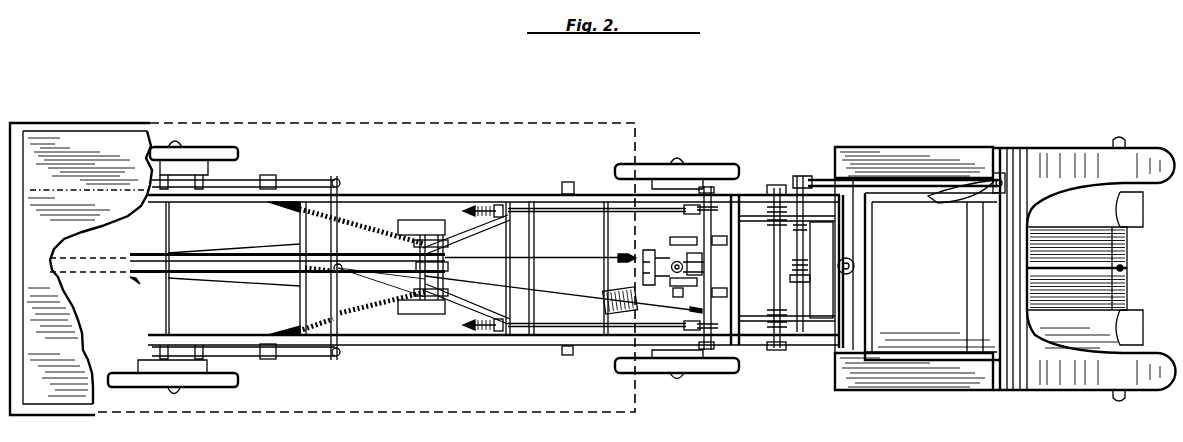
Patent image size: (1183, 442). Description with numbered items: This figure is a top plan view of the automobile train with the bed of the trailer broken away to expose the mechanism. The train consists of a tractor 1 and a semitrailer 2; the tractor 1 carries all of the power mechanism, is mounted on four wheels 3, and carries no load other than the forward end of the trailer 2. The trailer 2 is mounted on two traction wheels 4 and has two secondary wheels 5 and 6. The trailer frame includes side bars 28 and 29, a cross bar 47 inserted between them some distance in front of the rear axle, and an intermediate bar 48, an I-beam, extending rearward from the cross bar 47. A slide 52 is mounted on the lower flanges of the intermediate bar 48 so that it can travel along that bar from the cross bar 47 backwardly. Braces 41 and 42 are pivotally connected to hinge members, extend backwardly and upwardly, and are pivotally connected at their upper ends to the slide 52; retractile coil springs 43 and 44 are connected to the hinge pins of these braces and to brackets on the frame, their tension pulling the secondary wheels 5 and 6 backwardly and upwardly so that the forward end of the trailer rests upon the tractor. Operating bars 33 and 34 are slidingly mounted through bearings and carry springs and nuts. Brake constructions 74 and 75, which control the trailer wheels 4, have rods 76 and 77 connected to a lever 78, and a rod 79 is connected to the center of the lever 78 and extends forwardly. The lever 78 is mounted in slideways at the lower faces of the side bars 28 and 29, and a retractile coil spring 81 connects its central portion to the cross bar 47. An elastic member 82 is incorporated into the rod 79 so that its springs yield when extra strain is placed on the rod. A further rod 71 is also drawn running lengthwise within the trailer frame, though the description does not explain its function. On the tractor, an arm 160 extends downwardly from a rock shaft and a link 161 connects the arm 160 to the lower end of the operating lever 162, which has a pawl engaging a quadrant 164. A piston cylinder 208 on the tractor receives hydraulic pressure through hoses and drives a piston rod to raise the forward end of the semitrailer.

The tractor 1 is at (868, 400).
The semitrailer 2 is at (460, 359).
The wheels 3 is at (700, 164).
The traction wheels 4 is at (192, 147).
The secondary wheel 5 is at (418, 220).
The secondary wheel 6 is at (404, 320).
The side bar 28 is at (355, 195).
The side bar 29 is at (356, 345).
The operating bar 33 is at (575, 198).
The operating bar 34 is at (580, 323).
The brace 41 is at (212, 250).
The brace 42 is at (228, 308).
The retractile coil spring 43 is at (349, 231).
The retractile coil spring 44 is at (386, 316).
The cross bar 47 is at (300, 232).
The intermediate bar 48 is at (136, 243).
The slide 52 is at (134, 280).
The rod 71 is at (585, 258).
The brake construction 74 is at (232, 166).
The brake construction 75 is at (200, 358).
The rod 76 is at (288, 180).
The rod 77 is at (282, 357).
The lever 78 is at (336, 318).
The rod 79 is at (580, 296).
The retractile coil spring 81 is at (334, 270).
The elastic member 82 is at (617, 325).
The arm 160 is at (797, 178).
The link 161 is at (890, 180).
The operating lever 162 is at (992, 174).
The quadrant 164 is at (942, 203).
The piston cylinder 208 is at (838, 266).